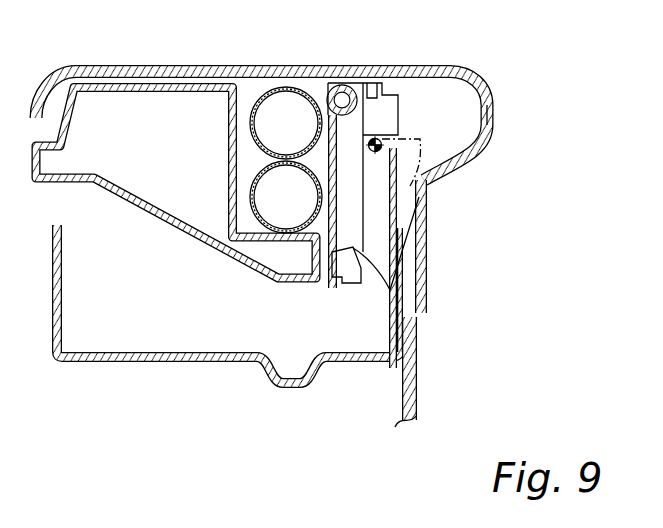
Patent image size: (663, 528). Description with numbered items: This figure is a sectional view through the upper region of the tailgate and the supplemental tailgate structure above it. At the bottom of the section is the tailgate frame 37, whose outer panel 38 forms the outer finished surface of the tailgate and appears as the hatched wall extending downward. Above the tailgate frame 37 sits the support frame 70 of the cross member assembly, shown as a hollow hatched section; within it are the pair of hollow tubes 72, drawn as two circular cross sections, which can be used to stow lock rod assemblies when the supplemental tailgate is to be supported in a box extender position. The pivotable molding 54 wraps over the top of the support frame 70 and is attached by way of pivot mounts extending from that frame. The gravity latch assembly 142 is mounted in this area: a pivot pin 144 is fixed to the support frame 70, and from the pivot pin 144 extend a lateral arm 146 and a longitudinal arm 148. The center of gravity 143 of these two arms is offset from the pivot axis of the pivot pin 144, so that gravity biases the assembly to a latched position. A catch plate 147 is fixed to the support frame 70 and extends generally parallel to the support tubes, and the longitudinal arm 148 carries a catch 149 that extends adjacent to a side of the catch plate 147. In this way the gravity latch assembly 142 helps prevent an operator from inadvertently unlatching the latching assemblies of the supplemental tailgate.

The tailgate frame 37 is at (163, 356).
The outer panel 38 is at (416, 353).
The pivotable molding 54 is at (496, 118).
The support frame 70 is at (145, 205).
The hollow tubes 72 is at (258, 97).
The gravity latch assembly 142 is at (437, 90).
The center of gravity 143 is at (433, 183).
The pivot pin 144 is at (348, 96).
The lateral arm 146 is at (398, 128).
The catch plate 147 is at (323, 162).
The longitudinal arm 148 is at (407, 252).
The catch 149 is at (426, 290).